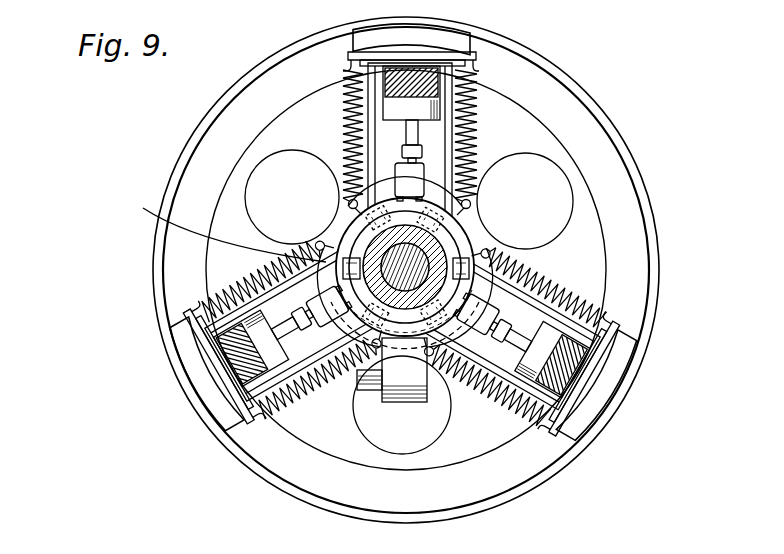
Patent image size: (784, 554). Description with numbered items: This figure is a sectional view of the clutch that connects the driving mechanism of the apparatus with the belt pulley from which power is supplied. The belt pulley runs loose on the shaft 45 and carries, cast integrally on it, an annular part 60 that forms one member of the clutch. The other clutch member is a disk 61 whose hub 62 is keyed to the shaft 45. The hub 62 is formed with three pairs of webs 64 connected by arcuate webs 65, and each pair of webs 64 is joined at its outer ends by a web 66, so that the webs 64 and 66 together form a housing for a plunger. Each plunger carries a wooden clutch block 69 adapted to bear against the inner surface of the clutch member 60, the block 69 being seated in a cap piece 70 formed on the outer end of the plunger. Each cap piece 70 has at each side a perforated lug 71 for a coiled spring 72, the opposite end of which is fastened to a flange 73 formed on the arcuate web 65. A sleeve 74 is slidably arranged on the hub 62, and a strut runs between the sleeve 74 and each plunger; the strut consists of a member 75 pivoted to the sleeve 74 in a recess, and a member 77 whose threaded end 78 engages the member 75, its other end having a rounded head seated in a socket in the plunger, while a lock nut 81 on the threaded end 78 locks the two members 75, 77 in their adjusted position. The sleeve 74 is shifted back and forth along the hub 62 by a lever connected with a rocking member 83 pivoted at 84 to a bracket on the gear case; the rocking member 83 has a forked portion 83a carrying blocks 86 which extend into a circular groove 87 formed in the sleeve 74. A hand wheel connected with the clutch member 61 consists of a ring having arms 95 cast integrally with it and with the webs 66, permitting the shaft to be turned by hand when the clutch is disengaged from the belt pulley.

The shaft 45 is at (387, 257).
The annular part 60 is at (205, 318).
The disk 61 is at (465, 267).
The hub 62 is at (407, 300).
The webs 64 is at (370, 130).
The arcuate webs 65 is at (450, 214).
The web 66 is at (453, 112).
The wooden clutch block 69 is at (440, 33).
The cap pieces 70 is at (386, 52).
The perforated lugs 71 is at (349, 50).
The coiled springs 72 is at (345, 105).
The flanges 73 is at (468, 234).
The sleeve 74 is at (350, 212).
The member 75 is at (424, 175).
The member 77 is at (406, 131).
The threaded end 78 is at (408, 255).
The lock nut 81 is at (422, 155).
The rocking member 83 is at (412, 398).
The forked portion 83a is at (222, 223).
The pivot 84 is at (378, 392).
The blocks 86 is at (500, 262).
The circular groove 87 is at (460, 258).
The arms 95 is at (403, 242).